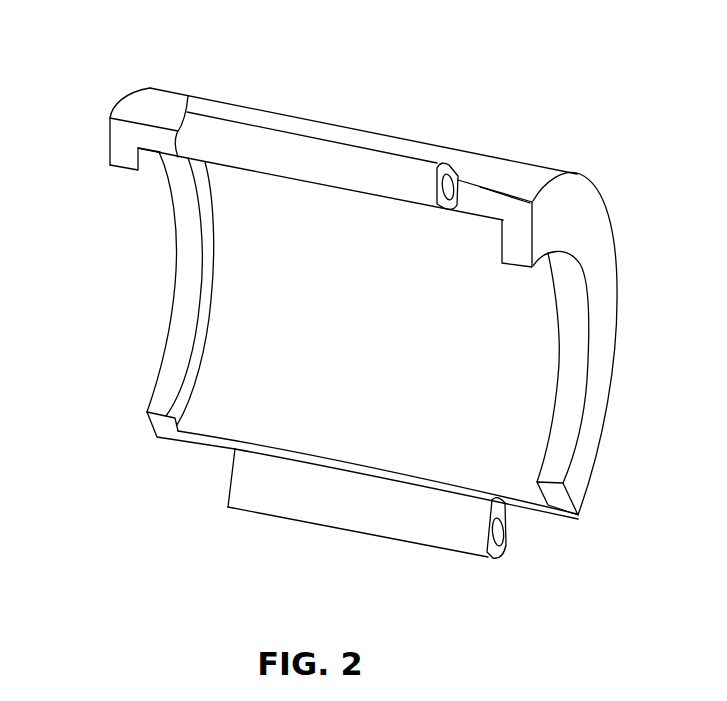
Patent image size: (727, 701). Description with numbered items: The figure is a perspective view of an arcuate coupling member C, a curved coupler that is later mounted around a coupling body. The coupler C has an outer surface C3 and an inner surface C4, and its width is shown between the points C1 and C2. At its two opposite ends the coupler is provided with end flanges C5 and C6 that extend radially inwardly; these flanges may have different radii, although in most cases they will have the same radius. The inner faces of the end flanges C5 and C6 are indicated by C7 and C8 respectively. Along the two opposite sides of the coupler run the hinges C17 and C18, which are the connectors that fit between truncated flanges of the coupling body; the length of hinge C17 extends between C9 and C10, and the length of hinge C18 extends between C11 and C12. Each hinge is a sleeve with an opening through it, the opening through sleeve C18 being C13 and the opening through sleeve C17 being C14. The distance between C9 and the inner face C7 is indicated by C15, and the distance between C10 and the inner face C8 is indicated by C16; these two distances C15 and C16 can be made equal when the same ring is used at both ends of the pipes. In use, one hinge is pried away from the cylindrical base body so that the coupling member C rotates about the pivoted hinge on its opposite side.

The arcuate coupling member C is at (320, 96).
The width end of coupler C1 is at (146, 84).
The width end of coupler C2 is at (598, 190).
The outer surface C3 is at (353, 129).
The inner surface C4 is at (248, 350).
The end flange C5 is at (200, 226).
The end flange C6 is at (580, 271).
The inner face of end flange C7 is at (202, 272).
The inner face of end flange C8 is at (556, 384).
The hinge end C9 is at (187, 96).
The hinge end C10 is at (450, 170).
The hinge end C11 is at (233, 449).
The hinge end C12 is at (497, 562).
The opening through sleeve C13 is at (459, 185).
The opening through sleeve C14 is at (500, 531).
The distance C15 is at (161, 155).
The distance C16 is at (498, 219).
The hinge C17 is at (366, 169).
The hinge C18 is at (349, 500).